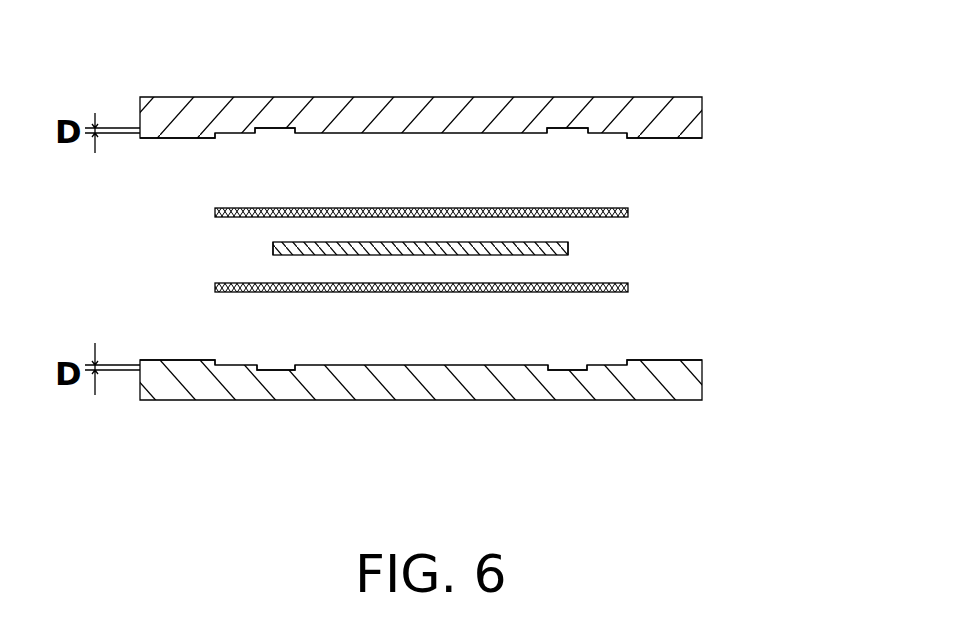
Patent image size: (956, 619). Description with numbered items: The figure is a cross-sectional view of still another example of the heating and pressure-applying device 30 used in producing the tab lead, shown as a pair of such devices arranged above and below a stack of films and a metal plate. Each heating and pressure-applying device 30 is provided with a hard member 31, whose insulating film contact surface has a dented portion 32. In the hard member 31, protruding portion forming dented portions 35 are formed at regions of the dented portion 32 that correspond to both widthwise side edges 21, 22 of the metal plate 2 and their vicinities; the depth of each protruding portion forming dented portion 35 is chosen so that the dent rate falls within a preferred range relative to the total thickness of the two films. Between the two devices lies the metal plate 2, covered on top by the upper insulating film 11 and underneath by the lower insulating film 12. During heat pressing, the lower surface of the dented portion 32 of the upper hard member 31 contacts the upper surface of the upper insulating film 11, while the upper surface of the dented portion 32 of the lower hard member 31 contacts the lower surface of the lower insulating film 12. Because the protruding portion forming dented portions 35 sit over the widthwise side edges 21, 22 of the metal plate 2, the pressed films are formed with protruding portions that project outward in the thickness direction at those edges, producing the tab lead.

The heating and pressure-applying device 30 is at (465, 241).
The hard member 31 is at (690, 108).
The dented portion 32 is at (605, 133).
The protruding portion forming dented portion 35 is at (270, 130).
The upper insulating film 11 is at (628, 212).
The lower insulating film 12 is at (628, 288).
The metal plate 2 is at (428, 256).
The widthwise side edge 21 is at (273, 248).
The widthwise side edge 22 is at (568, 250).